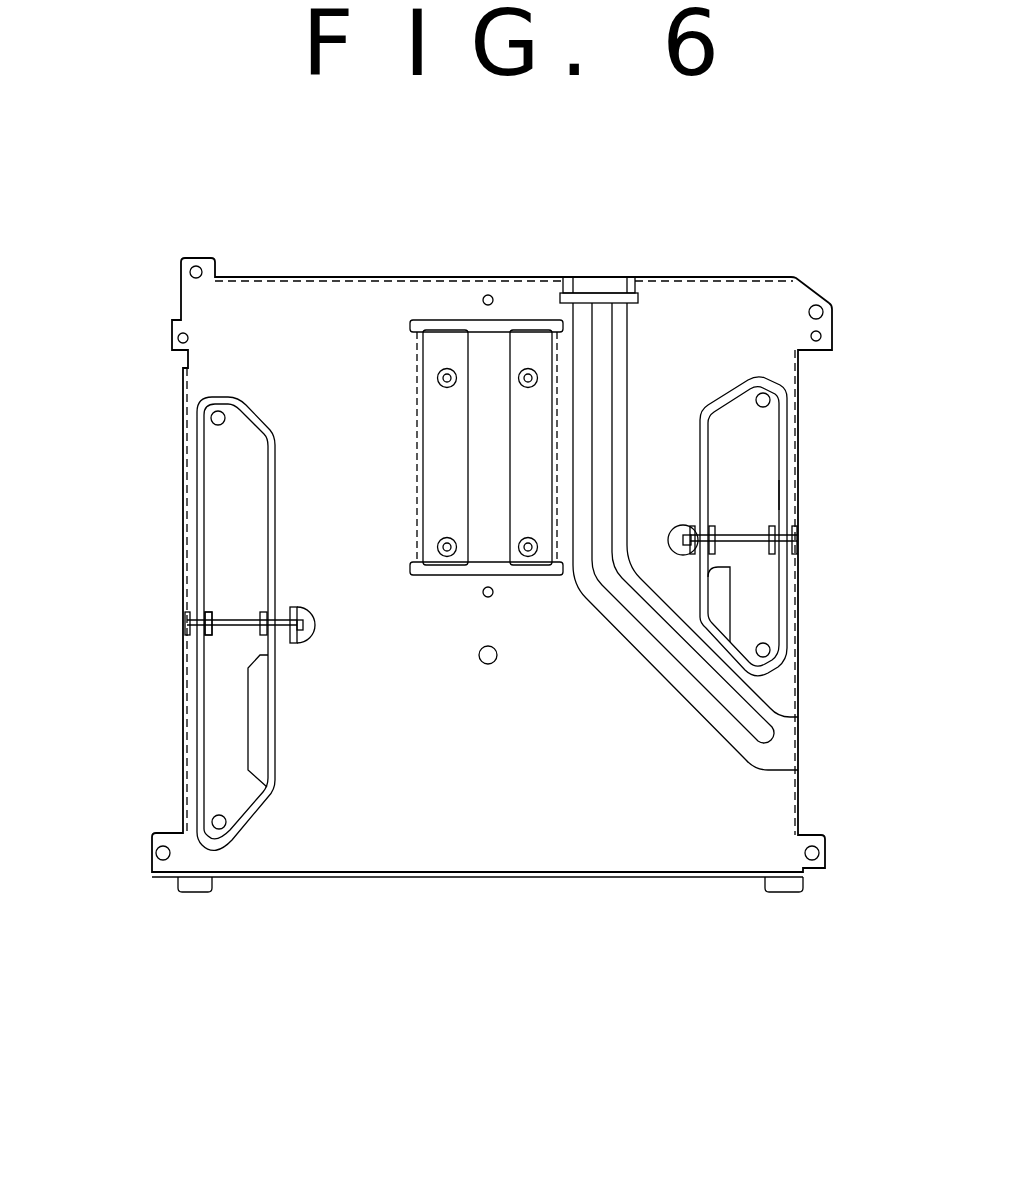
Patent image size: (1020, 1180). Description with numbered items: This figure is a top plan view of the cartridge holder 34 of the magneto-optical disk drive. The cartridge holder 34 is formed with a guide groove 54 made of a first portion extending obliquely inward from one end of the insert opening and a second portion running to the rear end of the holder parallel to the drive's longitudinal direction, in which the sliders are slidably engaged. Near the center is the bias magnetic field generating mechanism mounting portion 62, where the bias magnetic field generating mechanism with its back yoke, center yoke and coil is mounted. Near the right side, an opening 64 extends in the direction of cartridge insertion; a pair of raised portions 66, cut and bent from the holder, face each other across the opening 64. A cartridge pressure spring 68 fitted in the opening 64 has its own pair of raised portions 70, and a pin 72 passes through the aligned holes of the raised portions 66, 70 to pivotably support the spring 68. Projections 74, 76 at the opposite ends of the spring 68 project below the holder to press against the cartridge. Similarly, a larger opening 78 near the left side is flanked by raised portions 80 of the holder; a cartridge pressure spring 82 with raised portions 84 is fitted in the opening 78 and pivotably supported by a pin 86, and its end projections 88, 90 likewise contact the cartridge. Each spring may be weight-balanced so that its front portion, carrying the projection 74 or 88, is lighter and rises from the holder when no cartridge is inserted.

The cartridge holder 34 is at (482, 825).
The guide groove 54 is at (652, 648).
The bias magnetic field generating mechanism mounting portion 62 is at (465, 312).
The opening 64 is at (778, 500).
The raised portions 66 is at (684, 526).
The cartridge pressure spring 68 is at (767, 450).
The raised portions 70 is at (770, 525).
The pin 72 is at (745, 548).
The projection 74 is at (770, 655).
The projection 76 is at (770, 398).
The opening 78 is at (262, 722).
The raised portions 80 is at (190, 622).
The cartridge pressure spring 82 is at (228, 478).
The raised portions 84 is at (260, 617).
The pin 86 is at (232, 640).
The projection 88 is at (224, 828).
The projection 90 is at (215, 418).